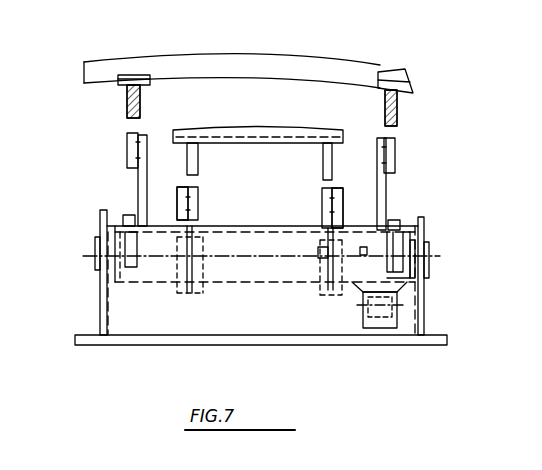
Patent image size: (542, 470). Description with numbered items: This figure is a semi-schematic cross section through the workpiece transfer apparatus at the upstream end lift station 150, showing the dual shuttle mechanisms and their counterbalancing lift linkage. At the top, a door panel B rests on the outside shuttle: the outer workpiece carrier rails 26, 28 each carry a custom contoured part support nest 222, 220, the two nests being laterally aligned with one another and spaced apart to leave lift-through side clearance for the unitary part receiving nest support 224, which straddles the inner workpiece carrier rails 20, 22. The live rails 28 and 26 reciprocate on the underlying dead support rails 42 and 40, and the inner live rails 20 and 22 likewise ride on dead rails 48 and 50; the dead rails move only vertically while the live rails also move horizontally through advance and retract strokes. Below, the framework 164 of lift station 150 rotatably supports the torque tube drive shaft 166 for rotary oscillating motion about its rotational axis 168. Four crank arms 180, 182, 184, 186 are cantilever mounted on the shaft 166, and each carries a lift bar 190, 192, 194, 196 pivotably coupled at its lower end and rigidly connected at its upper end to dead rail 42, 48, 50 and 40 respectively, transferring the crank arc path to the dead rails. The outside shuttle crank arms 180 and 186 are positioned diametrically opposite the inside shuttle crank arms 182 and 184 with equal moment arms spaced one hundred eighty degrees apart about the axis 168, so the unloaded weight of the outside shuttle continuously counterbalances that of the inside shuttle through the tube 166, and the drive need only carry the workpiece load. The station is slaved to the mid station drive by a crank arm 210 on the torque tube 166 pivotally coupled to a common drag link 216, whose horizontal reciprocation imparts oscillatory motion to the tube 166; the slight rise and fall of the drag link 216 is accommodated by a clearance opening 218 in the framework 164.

The automotive body door panel B is at (273, 49).
The outer workpiece carrier rail 28 is at (121, 97).
The part support nest 220 is at (147, 74).
The part support nest 222 is at (377, 70).
The outer workpiece carrier rail 26 is at (402, 107).
The unitary part receiving nest support 224 is at (282, 128).
The inner workpiece carrier rail 20 is at (199, 157).
The inner workpiece carrier rail 22 is at (321, 153).
The support rail 42 is at (126, 140).
The support rail 40 is at (397, 150).
The lift bar 190 is at (138, 182).
The lift bar 196 is at (377, 168).
The lift bar 192 is at (176, 199).
The lift bar 194 is at (344, 207).
The support rail 48 is at (200, 207).
The support rail 50 is at (320, 208).
The crank arm 180 is at (127, 217).
The crank arm 186 is at (395, 220).
The upstream end lift station 150 is at (426, 213).
The framework 164 is at (99, 302).
The rotational axis 168 is at (430, 262).
The torque tube drive shaft 166 is at (222, 283).
The crank arm 182 is at (190, 289).
The crank arm 184 is at (324, 286).
The crank arm 210 is at (318, 249).
The clearance opening 218 is at (394, 327).
The drag link 216 is at (380, 317).